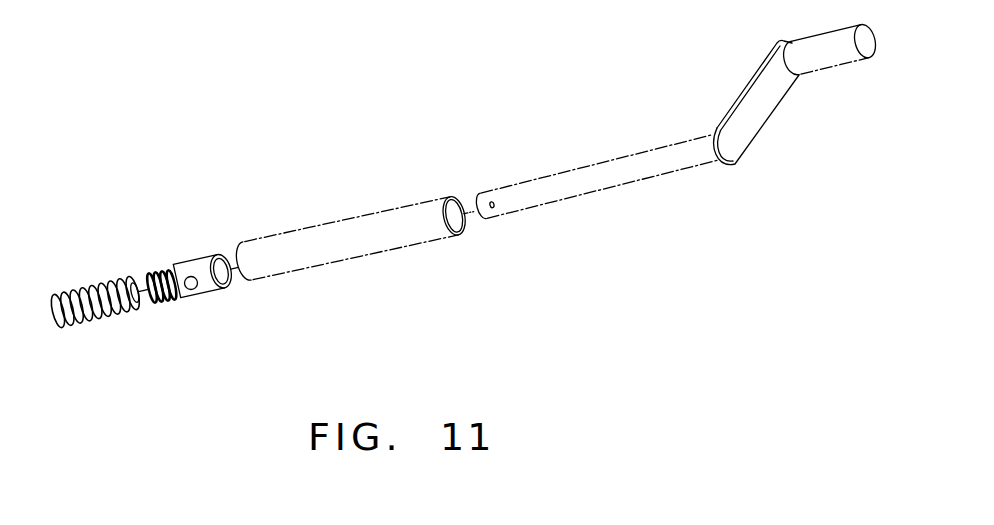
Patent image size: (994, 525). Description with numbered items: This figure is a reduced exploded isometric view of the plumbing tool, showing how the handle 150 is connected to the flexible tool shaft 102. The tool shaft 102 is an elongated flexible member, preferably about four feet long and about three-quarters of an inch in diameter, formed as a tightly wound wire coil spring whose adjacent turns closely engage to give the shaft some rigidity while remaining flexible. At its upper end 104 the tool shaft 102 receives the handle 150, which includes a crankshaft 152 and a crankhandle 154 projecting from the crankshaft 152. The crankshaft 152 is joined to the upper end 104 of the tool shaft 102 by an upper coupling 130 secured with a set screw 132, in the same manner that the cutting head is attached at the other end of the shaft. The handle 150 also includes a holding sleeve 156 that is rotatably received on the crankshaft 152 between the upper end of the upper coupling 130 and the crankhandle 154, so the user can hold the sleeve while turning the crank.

The tool shaft 102 is at (77, 337).
The upper end 104 is at (135, 277).
The upper coupling 130 is at (212, 300).
The set screw 132 is at (189, 300).
The handle 150 is at (753, 100).
The crankshaft 152 is at (578, 180).
The crankhandle 154 is at (830, 33).
The holding sleeve 156 is at (320, 250).